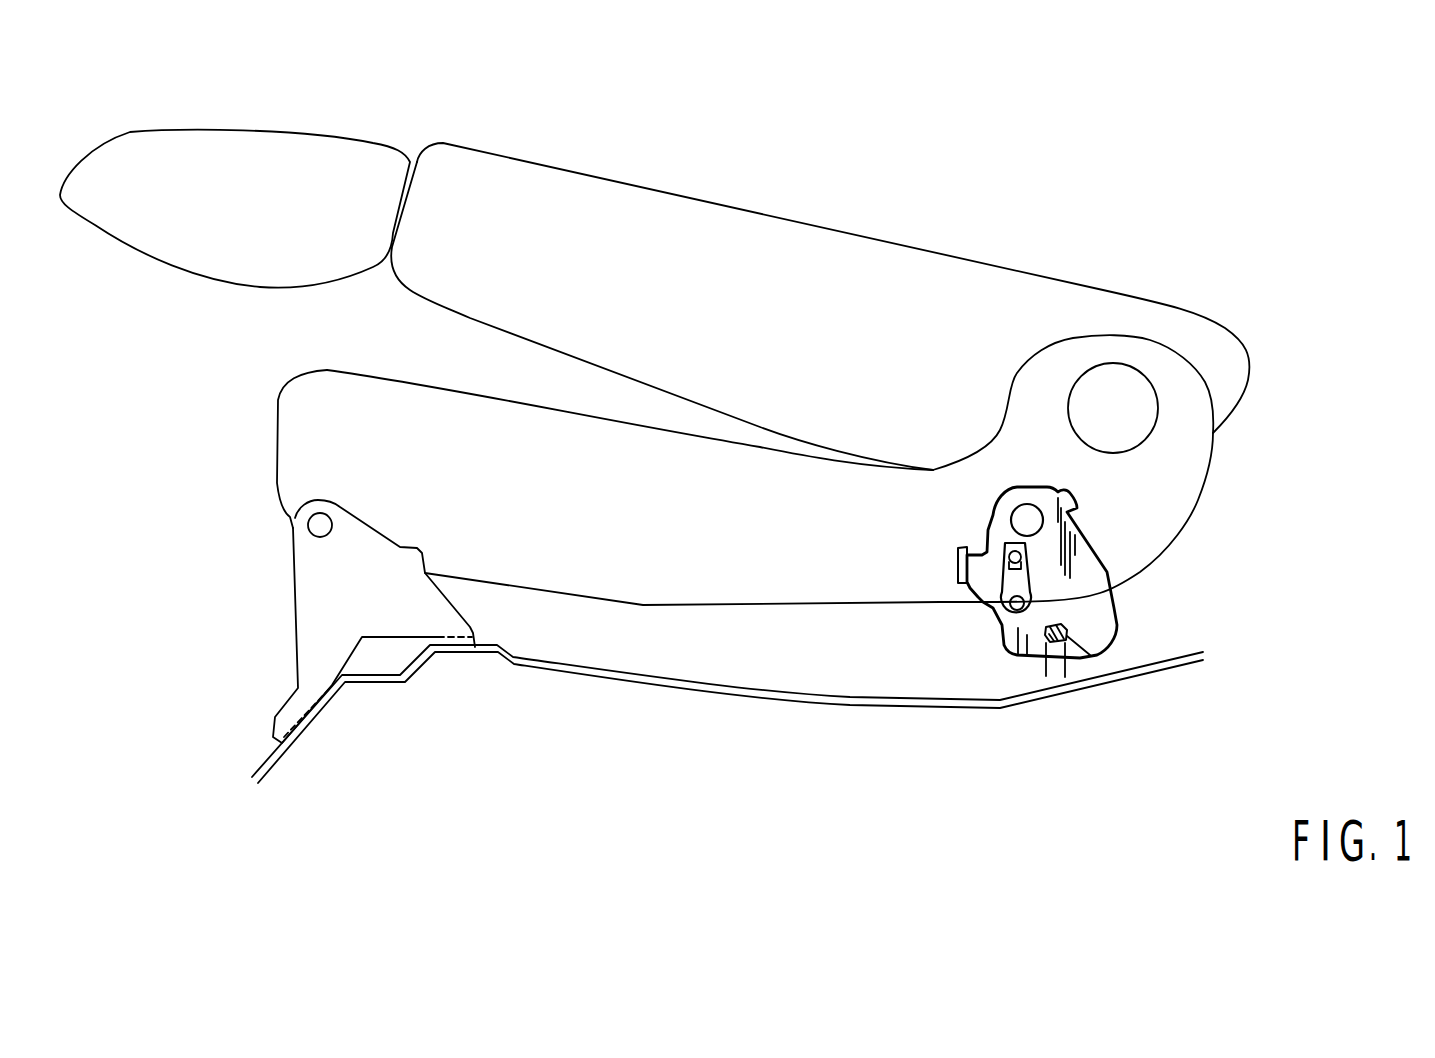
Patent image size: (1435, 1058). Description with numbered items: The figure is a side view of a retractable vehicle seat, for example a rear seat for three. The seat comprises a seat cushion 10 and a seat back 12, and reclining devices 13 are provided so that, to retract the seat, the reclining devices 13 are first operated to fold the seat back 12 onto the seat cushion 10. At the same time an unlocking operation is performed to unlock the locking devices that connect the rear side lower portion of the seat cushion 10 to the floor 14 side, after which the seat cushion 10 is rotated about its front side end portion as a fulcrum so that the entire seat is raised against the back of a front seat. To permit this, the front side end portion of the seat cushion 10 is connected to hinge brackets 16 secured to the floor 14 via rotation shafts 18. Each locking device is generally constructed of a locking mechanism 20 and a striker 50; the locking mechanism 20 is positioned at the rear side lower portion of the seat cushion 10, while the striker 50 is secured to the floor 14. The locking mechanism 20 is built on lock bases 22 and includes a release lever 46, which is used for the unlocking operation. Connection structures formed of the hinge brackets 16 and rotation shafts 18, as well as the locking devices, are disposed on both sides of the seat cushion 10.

The seat cushion 10 is at (693, 580).
The seat back 12 is at (725, 230).
The reclining device 13 is at (1122, 363).
The floor 14 is at (850, 693).
The hinge bracket 16 is at (313, 602).
The rotation shaft 18 is at (318, 526).
The locking mechanism 20 is at (1115, 550).
The lock base 22 is at (1103, 605).
The release lever 46 is at (1013, 578).
The striker 50 is at (1044, 642).